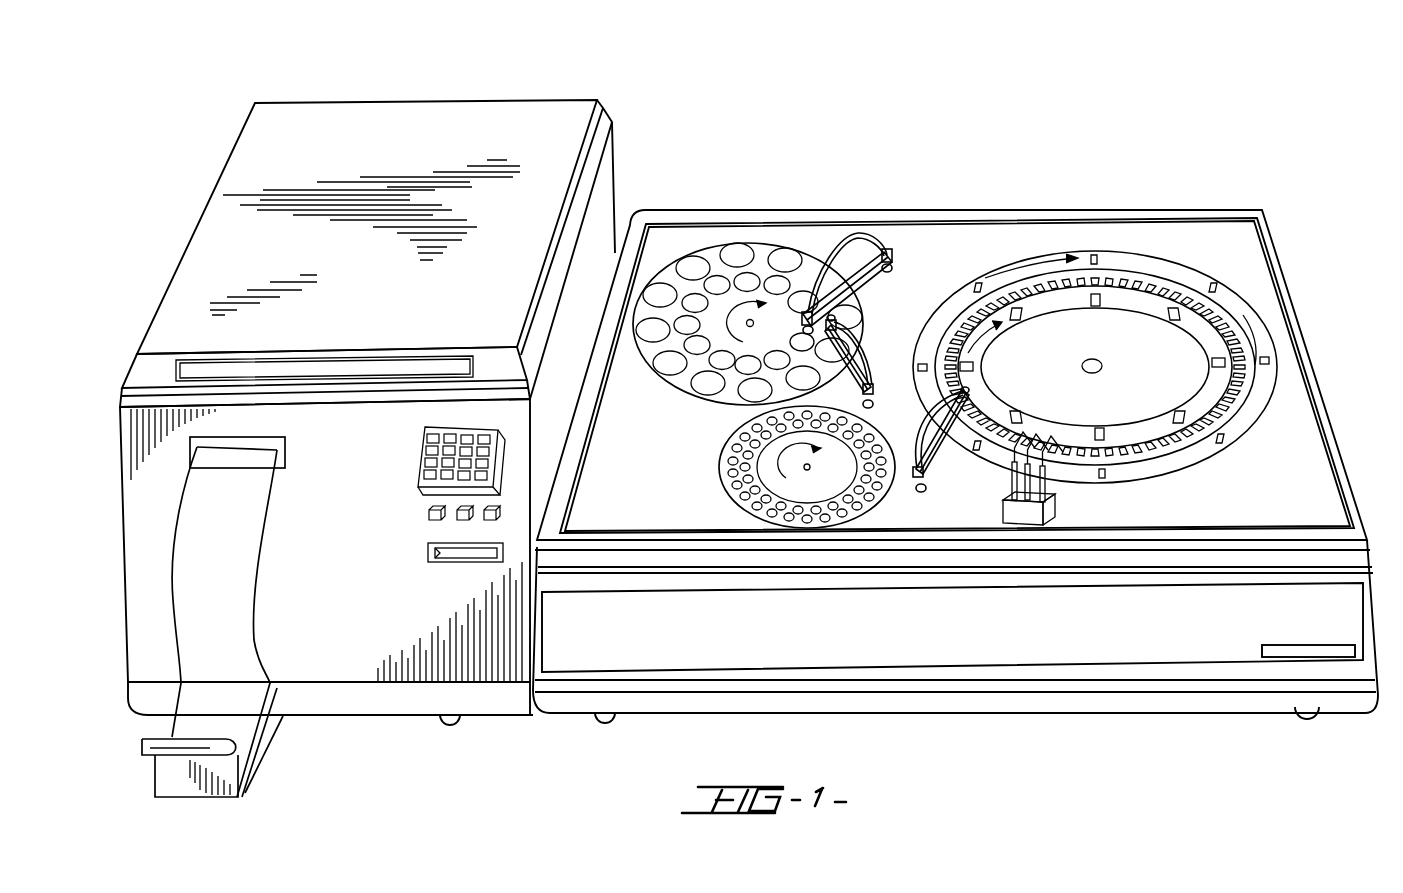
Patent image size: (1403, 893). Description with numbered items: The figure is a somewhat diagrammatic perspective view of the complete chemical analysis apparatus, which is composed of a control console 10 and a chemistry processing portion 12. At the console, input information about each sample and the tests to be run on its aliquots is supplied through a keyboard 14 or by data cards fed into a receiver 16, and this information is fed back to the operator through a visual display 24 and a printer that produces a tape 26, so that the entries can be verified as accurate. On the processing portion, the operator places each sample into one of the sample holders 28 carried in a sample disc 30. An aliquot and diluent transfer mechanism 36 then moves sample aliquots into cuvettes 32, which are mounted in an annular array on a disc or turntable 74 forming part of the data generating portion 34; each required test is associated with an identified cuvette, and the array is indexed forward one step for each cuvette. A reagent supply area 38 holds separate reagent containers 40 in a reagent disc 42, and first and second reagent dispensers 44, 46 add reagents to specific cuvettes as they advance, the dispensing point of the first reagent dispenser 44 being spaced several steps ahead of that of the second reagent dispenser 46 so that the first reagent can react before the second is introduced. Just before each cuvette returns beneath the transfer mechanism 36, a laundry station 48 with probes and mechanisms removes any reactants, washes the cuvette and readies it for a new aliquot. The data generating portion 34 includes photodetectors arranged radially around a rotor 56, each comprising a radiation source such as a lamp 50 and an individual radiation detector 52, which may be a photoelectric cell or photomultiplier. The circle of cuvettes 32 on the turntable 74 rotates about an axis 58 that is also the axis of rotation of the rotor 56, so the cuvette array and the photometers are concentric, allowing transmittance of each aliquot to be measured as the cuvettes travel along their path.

The control console 10 is at (196, 172).
The chemistry processing portion 12 is at (941, 198).
The keyboard 14 is at (410, 462).
The receiver 16 is at (422, 552).
The visual display 24 is at (294, 366).
The tape 26 is at (198, 576).
The sample holders 28 is at (752, 447).
The sample disc 30 is at (716, 491).
The cuvettes 32 is at (1163, 284).
The data generating portion 34 is at (1219, 260).
The aliquot and diluent transfer mechanism 36 is at (932, 462).
The reagent supply area 38 is at (664, 252).
The reagent containers 40 is at (715, 280).
The reagent disc 42 is at (767, 250).
The first reagent dispenser 44 is at (856, 353).
The second reagent dispenser 46 is at (886, 250).
The laundry station 48 is at (1058, 505).
The lamp 50 is at (1092, 258).
The radiation detectors 52 is at (1092, 302).
The rotor 56 is at (1262, 380).
The axis 58 is at (1098, 362).
The turntable 74 is at (1240, 322).